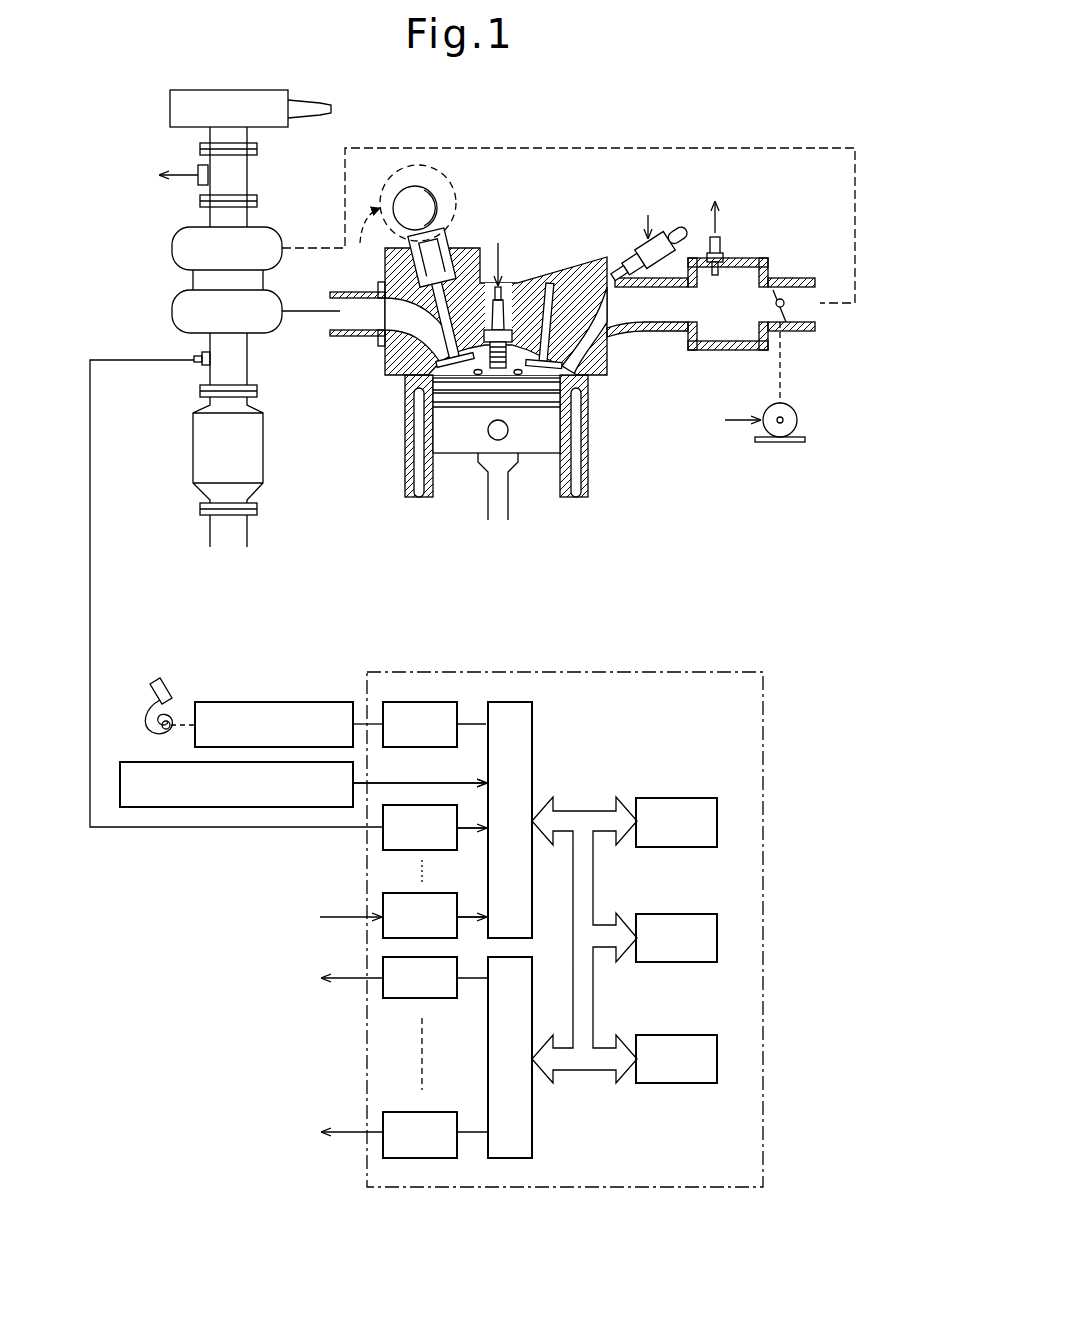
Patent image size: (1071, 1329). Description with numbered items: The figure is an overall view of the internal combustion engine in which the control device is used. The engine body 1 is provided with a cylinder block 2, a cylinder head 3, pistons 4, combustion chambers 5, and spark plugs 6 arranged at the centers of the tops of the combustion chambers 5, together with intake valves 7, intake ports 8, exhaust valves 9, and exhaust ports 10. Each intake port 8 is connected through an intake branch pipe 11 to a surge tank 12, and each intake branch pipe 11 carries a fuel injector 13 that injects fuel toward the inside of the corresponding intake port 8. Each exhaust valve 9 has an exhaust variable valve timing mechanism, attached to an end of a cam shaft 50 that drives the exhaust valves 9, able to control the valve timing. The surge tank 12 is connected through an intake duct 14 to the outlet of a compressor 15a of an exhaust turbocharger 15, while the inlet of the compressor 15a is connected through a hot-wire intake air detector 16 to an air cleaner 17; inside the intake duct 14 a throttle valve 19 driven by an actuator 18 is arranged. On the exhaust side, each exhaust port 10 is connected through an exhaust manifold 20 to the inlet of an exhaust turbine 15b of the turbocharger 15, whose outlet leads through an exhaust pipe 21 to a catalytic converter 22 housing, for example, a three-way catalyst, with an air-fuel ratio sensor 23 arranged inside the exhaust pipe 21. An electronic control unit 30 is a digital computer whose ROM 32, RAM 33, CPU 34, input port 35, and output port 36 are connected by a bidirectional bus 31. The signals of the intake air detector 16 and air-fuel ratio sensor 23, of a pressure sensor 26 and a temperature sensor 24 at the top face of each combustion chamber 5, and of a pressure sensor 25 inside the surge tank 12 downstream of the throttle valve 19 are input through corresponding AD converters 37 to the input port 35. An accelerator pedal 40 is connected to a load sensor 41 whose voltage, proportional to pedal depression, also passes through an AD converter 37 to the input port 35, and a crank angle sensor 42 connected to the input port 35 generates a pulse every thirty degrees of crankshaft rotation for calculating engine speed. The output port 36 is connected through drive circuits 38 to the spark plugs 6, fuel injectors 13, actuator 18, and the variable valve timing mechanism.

The engine body 1 is at (491, 339).
The cylinder block 2 is at (588, 440).
The cylinder head 3 is at (494, 373).
The piston 4 is at (447, 428).
The combustion chamber 5 is at (492, 376).
The spark plug 6 is at (490, 300).
The intake valve 7 is at (565, 398).
The intake port 8 is at (585, 336).
The exhaust valve 9 is at (415, 398).
The exhaust port 10 is at (430, 332).
The intake branch pipe 11 is at (660, 278).
The surge tank 12 is at (707, 350).
The fuel injector 13 is at (657, 248).
The intake duct 14 is at (803, 278).
The exhaust turbocharger 15 is at (177, 280).
The compressor 15a is at (185, 249).
The exhaust turbine 15b is at (182, 310).
The intake air detector 16 is at (247, 172).
The air cleaner 17 is at (170, 108).
The actuator 18 is at (762, 430).
The throttle valve 19 is at (781, 326).
The exhaust manifold 20 is at (338, 336).
The exhaust pipe 21 is at (218, 372).
The catalytic converter 22 is at (205, 447).
The air-fuel ratio sensor 23 is at (200, 356).
The temperature sensor 24 is at (519, 377).
The pressure sensor 25 is at (720, 268).
The pressure sensor 26 is at (480, 374).
The electronic control unit 30 is at (767, 718).
The bidirectional bus 31 is at (585, 808).
The ROM 32 is at (672, 798).
The RAM 33 is at (672, 914).
The CPU 34 is at (672, 1035).
The input port 35 is at (532, 725).
The output port 36 is at (532, 1123).
The AD converter 37 is at (405, 702).
The drive circuit 38 is at (383, 1122).
The accelerator pedal 40 is at (162, 690).
The load sensor 41 is at (273, 702).
The crank angle sensor 42 is at (138, 762).
The cam shaft 50 is at (423, 200).